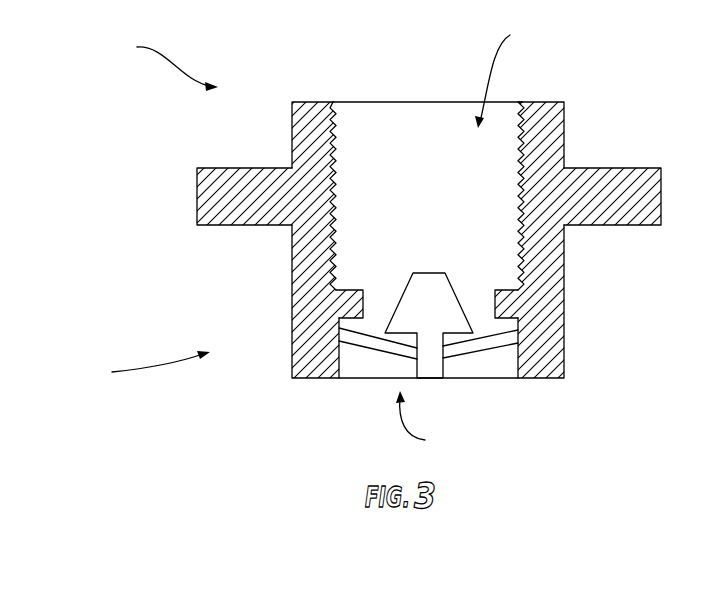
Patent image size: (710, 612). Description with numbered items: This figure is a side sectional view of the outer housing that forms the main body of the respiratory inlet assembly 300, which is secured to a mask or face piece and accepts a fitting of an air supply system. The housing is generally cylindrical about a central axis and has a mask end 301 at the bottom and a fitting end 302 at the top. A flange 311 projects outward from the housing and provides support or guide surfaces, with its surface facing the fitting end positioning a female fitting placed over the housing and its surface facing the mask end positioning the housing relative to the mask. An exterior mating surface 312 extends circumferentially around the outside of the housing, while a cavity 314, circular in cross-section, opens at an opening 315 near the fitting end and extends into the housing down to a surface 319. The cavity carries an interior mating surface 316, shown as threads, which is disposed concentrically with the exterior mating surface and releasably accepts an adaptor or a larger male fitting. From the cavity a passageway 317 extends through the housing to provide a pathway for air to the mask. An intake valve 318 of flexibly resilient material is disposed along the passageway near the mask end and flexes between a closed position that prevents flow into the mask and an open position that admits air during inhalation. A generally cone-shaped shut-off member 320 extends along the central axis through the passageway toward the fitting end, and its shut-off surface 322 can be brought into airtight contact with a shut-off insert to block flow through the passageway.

The respiratory inlet assembly 300 is at (379, 210).
The mask end 301 is at (135, 368).
The fitting end 302 is at (156, 62).
The flange 311 is at (196, 203).
The exterior mating surface 312 is at (291, 150).
The cavity 314 is at (511, 77).
The opening 315 is at (404, 96).
The interior mating surface 316 is at (374, 160).
The passageway 317 is at (428, 414).
The intake valve 318 is at (488, 343).
The surface 319 is at (343, 288).
The shut-off member 320 is at (451, 341).
The shut-off surface 322 is at (400, 292).